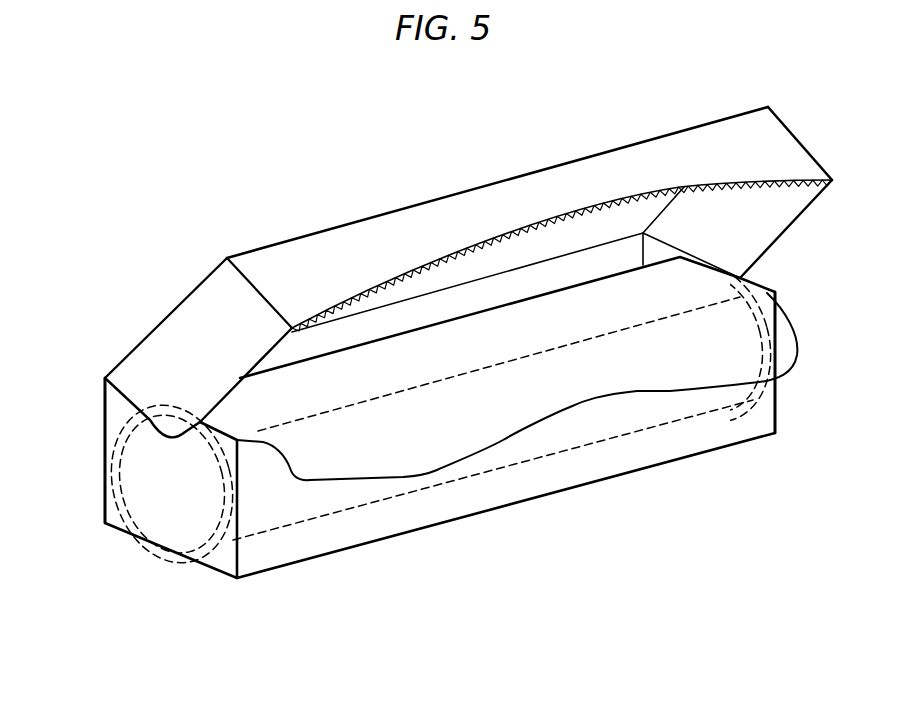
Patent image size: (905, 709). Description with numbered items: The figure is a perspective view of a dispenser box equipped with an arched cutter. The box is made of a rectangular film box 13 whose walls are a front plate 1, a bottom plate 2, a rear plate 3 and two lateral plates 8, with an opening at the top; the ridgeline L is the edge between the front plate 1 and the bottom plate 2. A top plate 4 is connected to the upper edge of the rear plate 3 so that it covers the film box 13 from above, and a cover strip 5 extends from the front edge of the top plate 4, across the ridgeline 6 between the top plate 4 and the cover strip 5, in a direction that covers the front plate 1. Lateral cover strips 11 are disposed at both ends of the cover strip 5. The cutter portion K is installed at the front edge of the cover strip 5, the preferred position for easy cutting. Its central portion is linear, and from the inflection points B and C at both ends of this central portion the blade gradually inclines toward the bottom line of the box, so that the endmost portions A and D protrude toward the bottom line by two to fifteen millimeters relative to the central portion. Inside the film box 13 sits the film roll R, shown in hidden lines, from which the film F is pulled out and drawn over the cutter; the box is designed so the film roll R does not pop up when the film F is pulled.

The front plate 1 is at (615, 462).
The bottom plate 2 is at (706, 478).
The rear plate 3 is at (92, 461).
The top plate 4 is at (467, 190).
The cover strip 5 is at (400, 232).
The ridgeline between top plate and cover strip 6 is at (295, 238).
The lateral plate 8 is at (794, 408).
The lateral cover strip 11 is at (178, 323).
The film box 13 is at (623, 257).
The endmost portion of cutter A is at (287, 310).
The point of inflection of cutter B is at (414, 247).
The point of inflection of cutter C is at (672, 170).
The endmost portion of cutter D is at (805, 168).
The cutter portion K is at (777, 236).
The ridgeline between front plate and bottom plate L is at (510, 505).
The film F is at (318, 481).
The film roll R is at (200, 564).